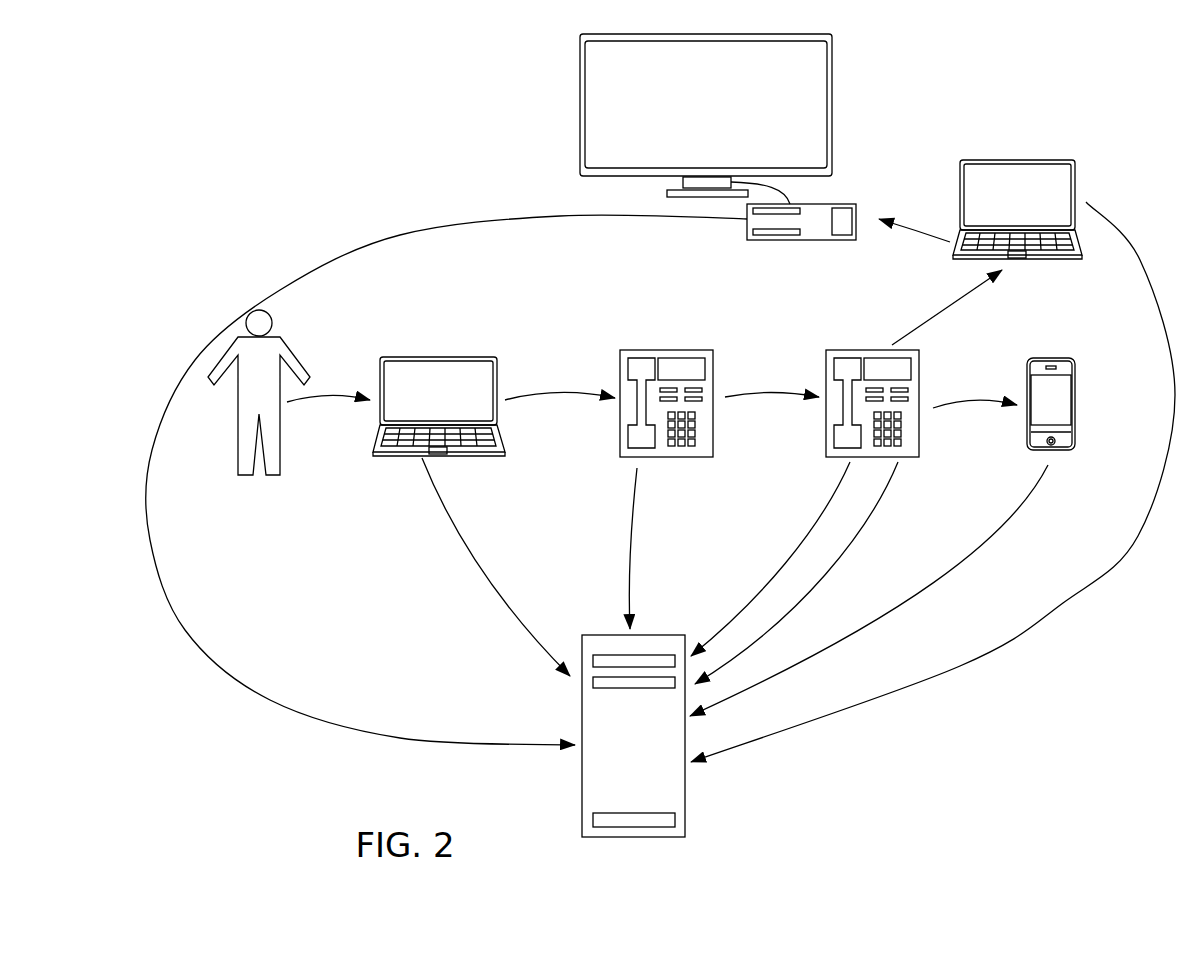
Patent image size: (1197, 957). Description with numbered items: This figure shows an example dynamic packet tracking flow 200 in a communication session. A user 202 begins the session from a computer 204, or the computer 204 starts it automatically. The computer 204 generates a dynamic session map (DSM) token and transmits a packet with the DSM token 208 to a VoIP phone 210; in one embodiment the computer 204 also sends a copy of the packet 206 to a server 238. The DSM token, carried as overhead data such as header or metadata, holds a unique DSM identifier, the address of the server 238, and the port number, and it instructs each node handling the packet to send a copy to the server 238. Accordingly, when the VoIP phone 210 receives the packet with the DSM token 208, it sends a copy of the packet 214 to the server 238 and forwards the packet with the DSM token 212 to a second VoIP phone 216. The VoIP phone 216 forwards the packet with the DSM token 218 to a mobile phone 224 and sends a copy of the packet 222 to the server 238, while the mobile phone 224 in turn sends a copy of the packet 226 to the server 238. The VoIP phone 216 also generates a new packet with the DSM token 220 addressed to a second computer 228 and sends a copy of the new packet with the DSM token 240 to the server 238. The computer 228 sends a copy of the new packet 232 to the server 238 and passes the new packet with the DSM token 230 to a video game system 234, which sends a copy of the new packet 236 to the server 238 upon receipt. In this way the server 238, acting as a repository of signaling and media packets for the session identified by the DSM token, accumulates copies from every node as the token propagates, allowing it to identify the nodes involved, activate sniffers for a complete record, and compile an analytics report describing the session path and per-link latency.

The system 200 is at (478, 96).
The user 202 is at (238, 445).
The computer 204 is at (442, 357).
The copy of the packet 206 is at (460, 545).
The packet with the DSM token 208 is at (557, 390).
The VoIP phone 210 is at (653, 352).
The packet with the DSM token 212 is at (758, 392).
The copy of the packet 214 is at (628, 540).
The VoIP phone 216 is at (863, 350).
The packet with the DSM token 218 is at (953, 400).
The new packet with the DSM token 220 is at (953, 305).
The copy of the packet 222 is at (800, 547).
The mobile phone 224 is at (1063, 358).
The copy of the packet 226 is at (977, 550).
The computer 228 is at (1043, 160).
The new packet with the DSM token 230 is at (913, 223).
The copy of the new packet 232 is at (1063, 603).
The video game system 234 is at (843, 204).
The copy of the new packet 236 is at (313, 247).
The server 238 is at (582, 795).
The copy of the new packet with the DSM token 240 is at (843, 560).